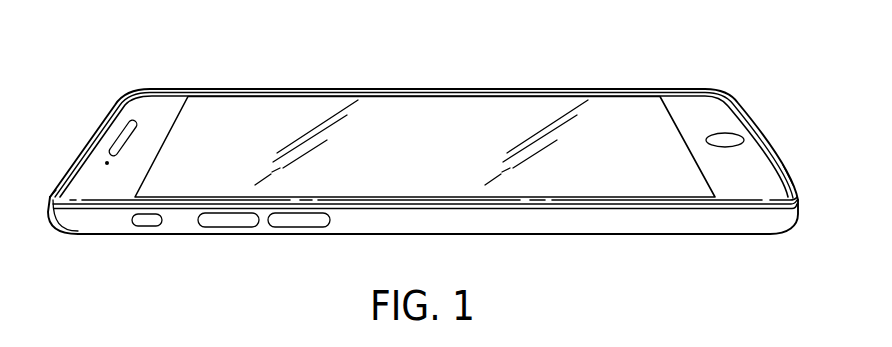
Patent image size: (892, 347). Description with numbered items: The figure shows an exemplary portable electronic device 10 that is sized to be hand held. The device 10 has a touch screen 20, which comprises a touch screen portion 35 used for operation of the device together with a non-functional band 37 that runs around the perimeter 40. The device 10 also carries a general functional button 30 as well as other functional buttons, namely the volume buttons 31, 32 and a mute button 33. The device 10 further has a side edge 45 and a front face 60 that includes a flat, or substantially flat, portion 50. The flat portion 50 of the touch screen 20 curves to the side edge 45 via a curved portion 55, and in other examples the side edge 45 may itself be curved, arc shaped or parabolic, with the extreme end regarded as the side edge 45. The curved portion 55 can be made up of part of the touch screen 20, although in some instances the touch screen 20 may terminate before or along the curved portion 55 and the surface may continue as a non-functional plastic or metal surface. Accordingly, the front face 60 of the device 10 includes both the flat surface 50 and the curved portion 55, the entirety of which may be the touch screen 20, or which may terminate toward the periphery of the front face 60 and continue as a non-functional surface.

The portable electronic device 10 is at (437, 146).
The touch screen 20 is at (425, 102).
The general functional button 30 is at (727, 133).
The volume button 31 is at (222, 220).
The volume button 32 is at (290, 220).
The mute button 33 is at (147, 220).
The touch screen portion 35 is at (423, 108).
The non-functional band 37 is at (62, 197).
The perimeter 40 is at (87, 137).
The side edge 45 is at (685, 220).
The flat portion 50 is at (610, 115).
The curved portion 55 is at (788, 185).
The front face 60 is at (728, 63).